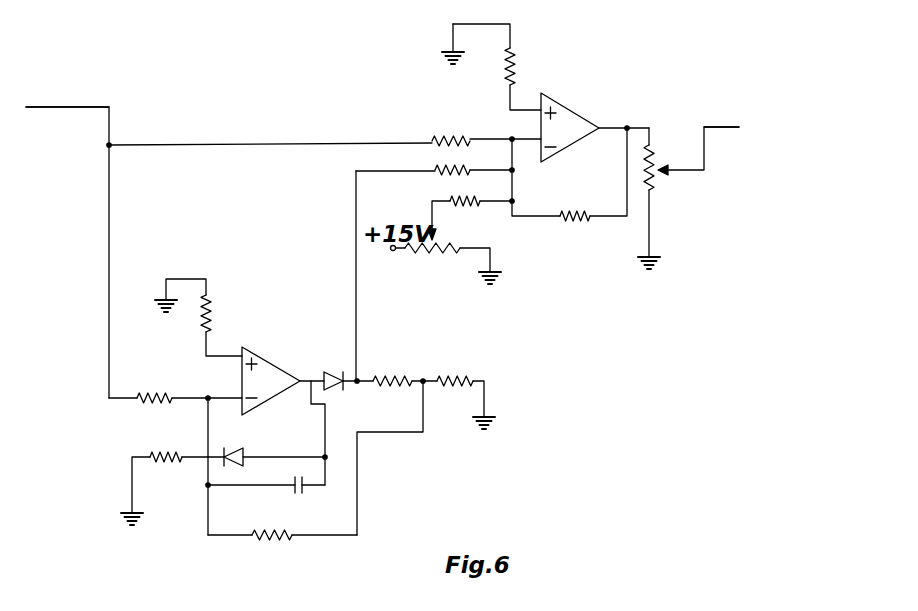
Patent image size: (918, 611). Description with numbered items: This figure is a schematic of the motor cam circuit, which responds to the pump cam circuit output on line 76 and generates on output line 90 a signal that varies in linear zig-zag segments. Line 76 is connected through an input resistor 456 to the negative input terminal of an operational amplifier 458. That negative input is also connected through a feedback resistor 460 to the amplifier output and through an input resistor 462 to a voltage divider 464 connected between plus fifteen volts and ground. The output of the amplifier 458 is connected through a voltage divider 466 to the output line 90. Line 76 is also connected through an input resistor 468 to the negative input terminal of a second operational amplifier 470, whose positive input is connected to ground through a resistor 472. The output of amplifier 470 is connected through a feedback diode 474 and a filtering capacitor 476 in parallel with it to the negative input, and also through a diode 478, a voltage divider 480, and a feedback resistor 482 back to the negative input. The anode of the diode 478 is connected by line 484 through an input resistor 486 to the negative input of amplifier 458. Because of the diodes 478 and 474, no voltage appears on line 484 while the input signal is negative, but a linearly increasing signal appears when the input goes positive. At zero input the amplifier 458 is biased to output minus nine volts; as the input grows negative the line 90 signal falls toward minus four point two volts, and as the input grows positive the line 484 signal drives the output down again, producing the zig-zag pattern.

The line 76 is at (47, 107).
The output line 90 is at (739, 127).
The input resistor 456 is at (452, 137).
The operational amplifier 458 is at (569, 108).
The feedback resistor 460 is at (570, 212).
The input resistor 462 is at (450, 210).
The voltage divider 464 is at (436, 254).
The voltage divider 466 is at (663, 157).
The input resistor 468 is at (152, 396).
The operational amplifier 470 is at (271, 360).
The resistor 472 is at (212, 321).
The feedback diode 474 is at (238, 451).
The filtering capacitor 476 is at (293, 489).
The diode 478 is at (334, 371).
The voltage divider 480 is at (425, 378).
The feedback resistor 482 is at (262, 540).
The line 484 is at (355, 307).
The input resistor 486 is at (436, 172).